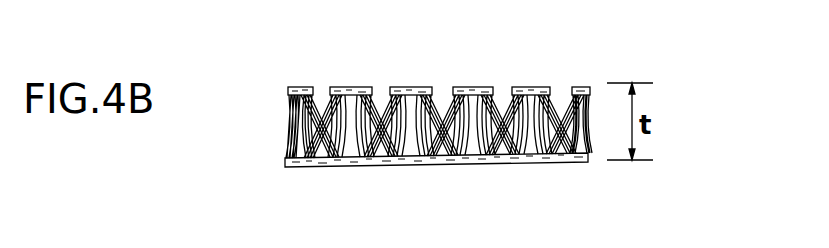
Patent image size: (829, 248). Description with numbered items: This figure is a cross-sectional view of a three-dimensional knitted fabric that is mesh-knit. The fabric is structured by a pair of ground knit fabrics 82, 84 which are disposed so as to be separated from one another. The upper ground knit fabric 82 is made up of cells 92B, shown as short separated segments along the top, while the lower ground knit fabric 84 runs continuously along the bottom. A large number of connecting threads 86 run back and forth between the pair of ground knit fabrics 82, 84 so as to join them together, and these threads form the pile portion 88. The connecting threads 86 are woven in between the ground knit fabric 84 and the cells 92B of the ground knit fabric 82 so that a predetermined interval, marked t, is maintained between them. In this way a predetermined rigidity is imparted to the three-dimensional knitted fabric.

The ground knit fabric 82 is at (413, 89).
The ground knit fabric 84 is at (443, 165).
The connecting threads 86 is at (318, 140).
The pile portion 88 is at (596, 100).
The cell 92B is at (305, 87).